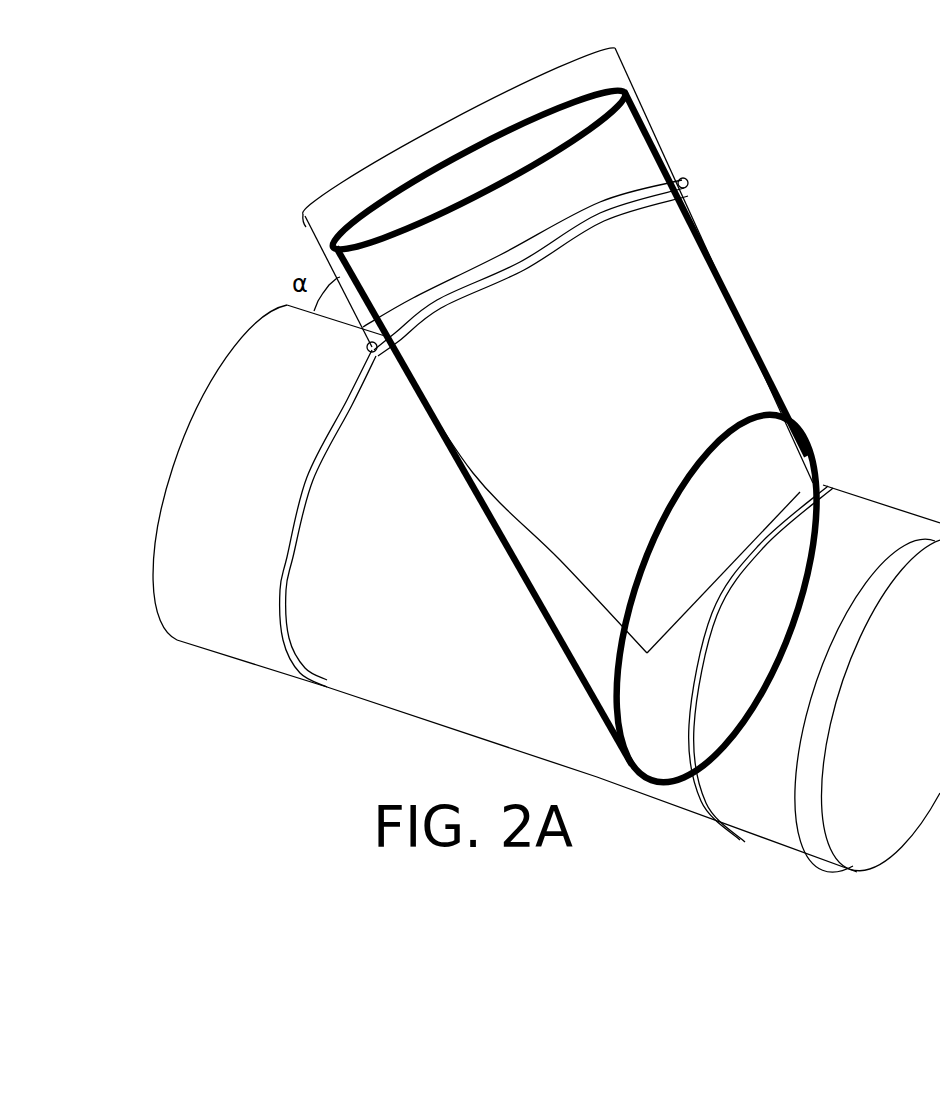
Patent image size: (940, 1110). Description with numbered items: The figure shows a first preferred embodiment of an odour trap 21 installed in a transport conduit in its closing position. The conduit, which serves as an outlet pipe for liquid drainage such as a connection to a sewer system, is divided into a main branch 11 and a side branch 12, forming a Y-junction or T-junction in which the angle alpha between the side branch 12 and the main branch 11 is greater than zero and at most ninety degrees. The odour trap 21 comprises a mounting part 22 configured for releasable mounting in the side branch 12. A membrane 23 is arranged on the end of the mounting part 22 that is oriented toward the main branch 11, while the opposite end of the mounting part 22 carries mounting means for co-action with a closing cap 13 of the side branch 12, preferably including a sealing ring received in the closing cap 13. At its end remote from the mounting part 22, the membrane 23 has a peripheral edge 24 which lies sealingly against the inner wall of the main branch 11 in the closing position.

The main branch 11 is at (482, 728).
The side branch 12 is at (763, 340).
The closing cap 13 is at (658, 127).
The odour trap 21 is at (530, 465).
The mounting part 22 is at (367, 260).
The membrane 23 is at (576, 637).
The peripheral edge 24 is at (650, 788).